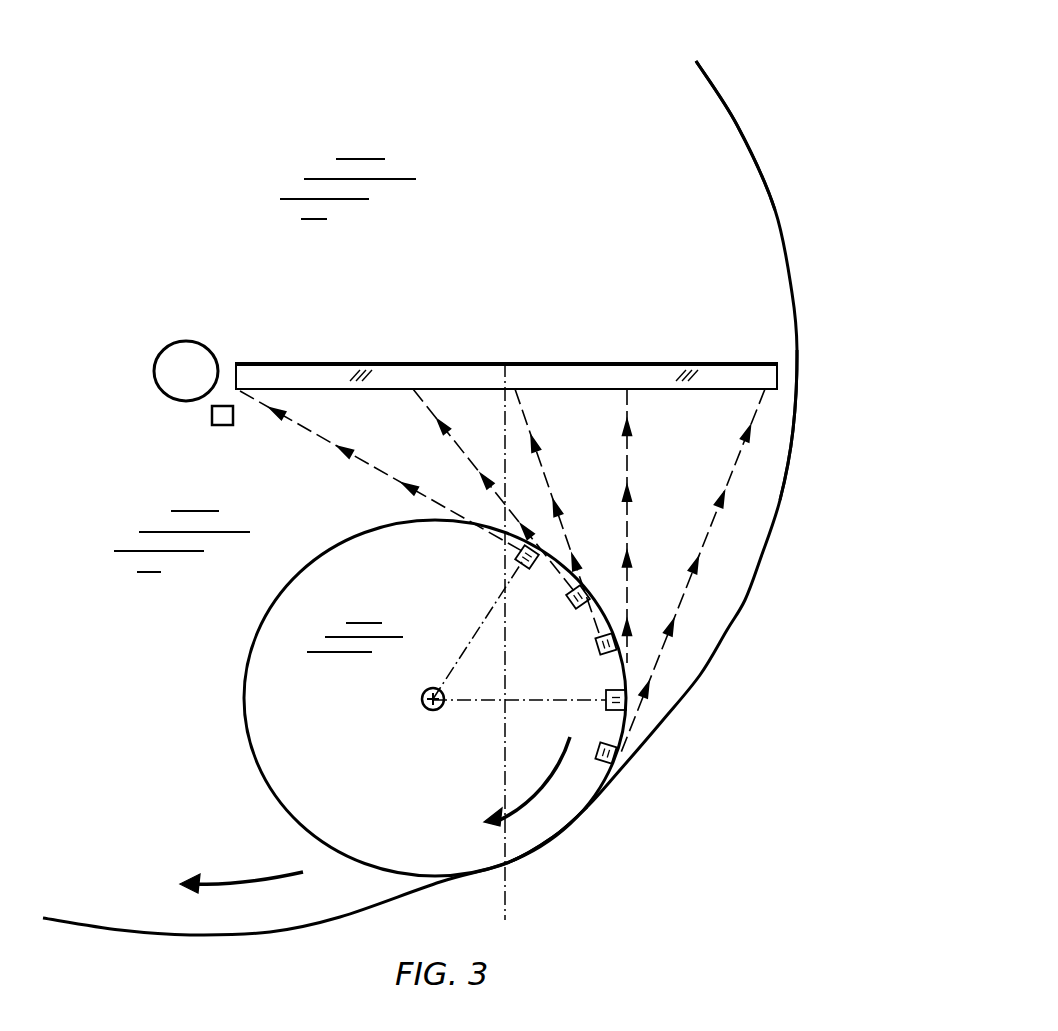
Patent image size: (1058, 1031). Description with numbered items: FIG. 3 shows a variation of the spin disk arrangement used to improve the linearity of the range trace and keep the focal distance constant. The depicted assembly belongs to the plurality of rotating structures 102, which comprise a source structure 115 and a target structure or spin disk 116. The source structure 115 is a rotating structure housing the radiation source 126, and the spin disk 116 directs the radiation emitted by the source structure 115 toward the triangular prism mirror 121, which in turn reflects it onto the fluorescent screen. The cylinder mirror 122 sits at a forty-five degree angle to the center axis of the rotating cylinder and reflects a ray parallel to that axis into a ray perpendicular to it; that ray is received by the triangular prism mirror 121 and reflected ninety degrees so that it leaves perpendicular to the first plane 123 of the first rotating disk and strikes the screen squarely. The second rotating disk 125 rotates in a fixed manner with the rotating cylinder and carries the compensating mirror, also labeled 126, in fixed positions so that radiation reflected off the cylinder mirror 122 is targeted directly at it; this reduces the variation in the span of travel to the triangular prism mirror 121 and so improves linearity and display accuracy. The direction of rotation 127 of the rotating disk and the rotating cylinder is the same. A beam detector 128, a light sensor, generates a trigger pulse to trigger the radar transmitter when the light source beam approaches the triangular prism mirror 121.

The rotating structures 102 is at (780, 305).
The source structure 115 is at (553, 828).
The spin disk 116 is at (797, 418).
The triangular prism mirror 121 is at (483, 378).
The cylinder mirror 122 is at (421, 700).
The first plane 123 is at (686, 160).
The second rotating disk 125 is at (267, 737).
The radiation source 126 is at (626, 700).
The direction of rotation 127 is at (537, 782).
The beam detector 128 is at (212, 411).